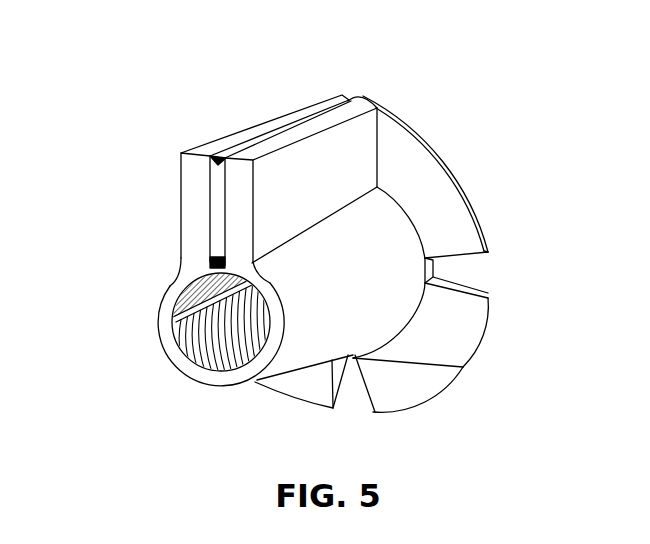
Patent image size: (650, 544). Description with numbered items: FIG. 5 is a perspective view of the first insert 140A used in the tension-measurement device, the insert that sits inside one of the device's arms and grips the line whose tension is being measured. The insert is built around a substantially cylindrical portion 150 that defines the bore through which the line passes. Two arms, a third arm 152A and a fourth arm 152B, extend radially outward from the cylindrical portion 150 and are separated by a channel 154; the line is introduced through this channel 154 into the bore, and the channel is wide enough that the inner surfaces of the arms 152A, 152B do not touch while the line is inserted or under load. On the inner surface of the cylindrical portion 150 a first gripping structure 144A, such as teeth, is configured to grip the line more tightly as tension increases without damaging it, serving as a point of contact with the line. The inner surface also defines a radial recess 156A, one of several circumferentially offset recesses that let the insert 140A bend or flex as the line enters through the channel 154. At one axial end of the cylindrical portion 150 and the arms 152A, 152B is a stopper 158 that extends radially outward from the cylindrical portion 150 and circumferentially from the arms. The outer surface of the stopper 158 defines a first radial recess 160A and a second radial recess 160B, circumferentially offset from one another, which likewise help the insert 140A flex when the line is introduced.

The first insert 140A is at (205, 65).
The first gripping structure 144A is at (195, 348).
The cylindrical portion 150 is at (356, 299).
The third arm 152A is at (193, 178).
The fourth arm 152B is at (331, 184).
The channel 154 is at (223, 154).
The radial recess 156A is at (173, 302).
The stopper 158 is at (425, 177).
The first radial recess 160A is at (350, 397).
The second radial recess 160B is at (463, 268).